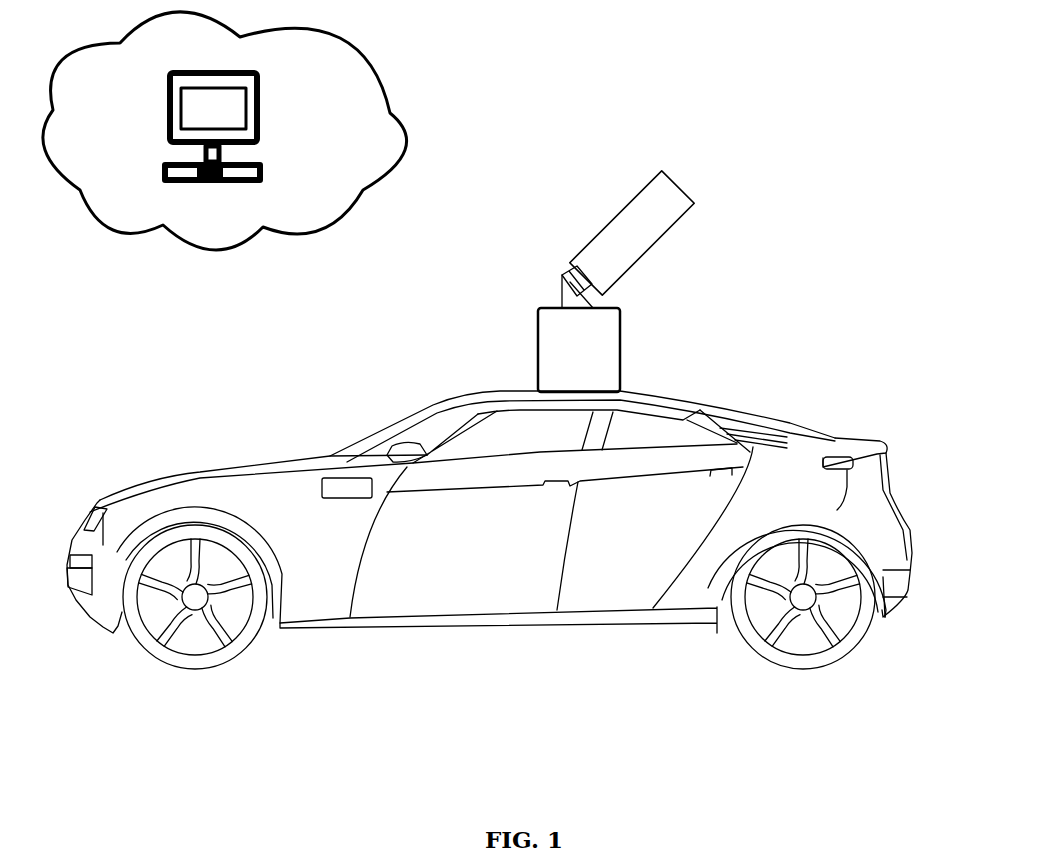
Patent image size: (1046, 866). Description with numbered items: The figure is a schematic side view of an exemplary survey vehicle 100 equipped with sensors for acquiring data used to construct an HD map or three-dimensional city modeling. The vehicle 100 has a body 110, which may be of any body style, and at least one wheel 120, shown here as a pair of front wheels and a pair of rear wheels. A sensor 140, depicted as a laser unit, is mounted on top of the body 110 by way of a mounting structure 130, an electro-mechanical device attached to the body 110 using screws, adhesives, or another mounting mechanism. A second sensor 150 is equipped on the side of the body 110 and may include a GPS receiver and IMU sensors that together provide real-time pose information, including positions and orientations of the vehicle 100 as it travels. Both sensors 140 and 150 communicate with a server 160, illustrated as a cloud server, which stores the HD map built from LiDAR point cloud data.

The vehicle 100 is at (530, 746).
The body 110 is at (513, 517).
The wheel 120 is at (901, 643).
The mounting structure 130 is at (626, 345).
The sensor 140 is at (590, 225).
The sensor 150 is at (341, 471).
The server 160 is at (292, 115).